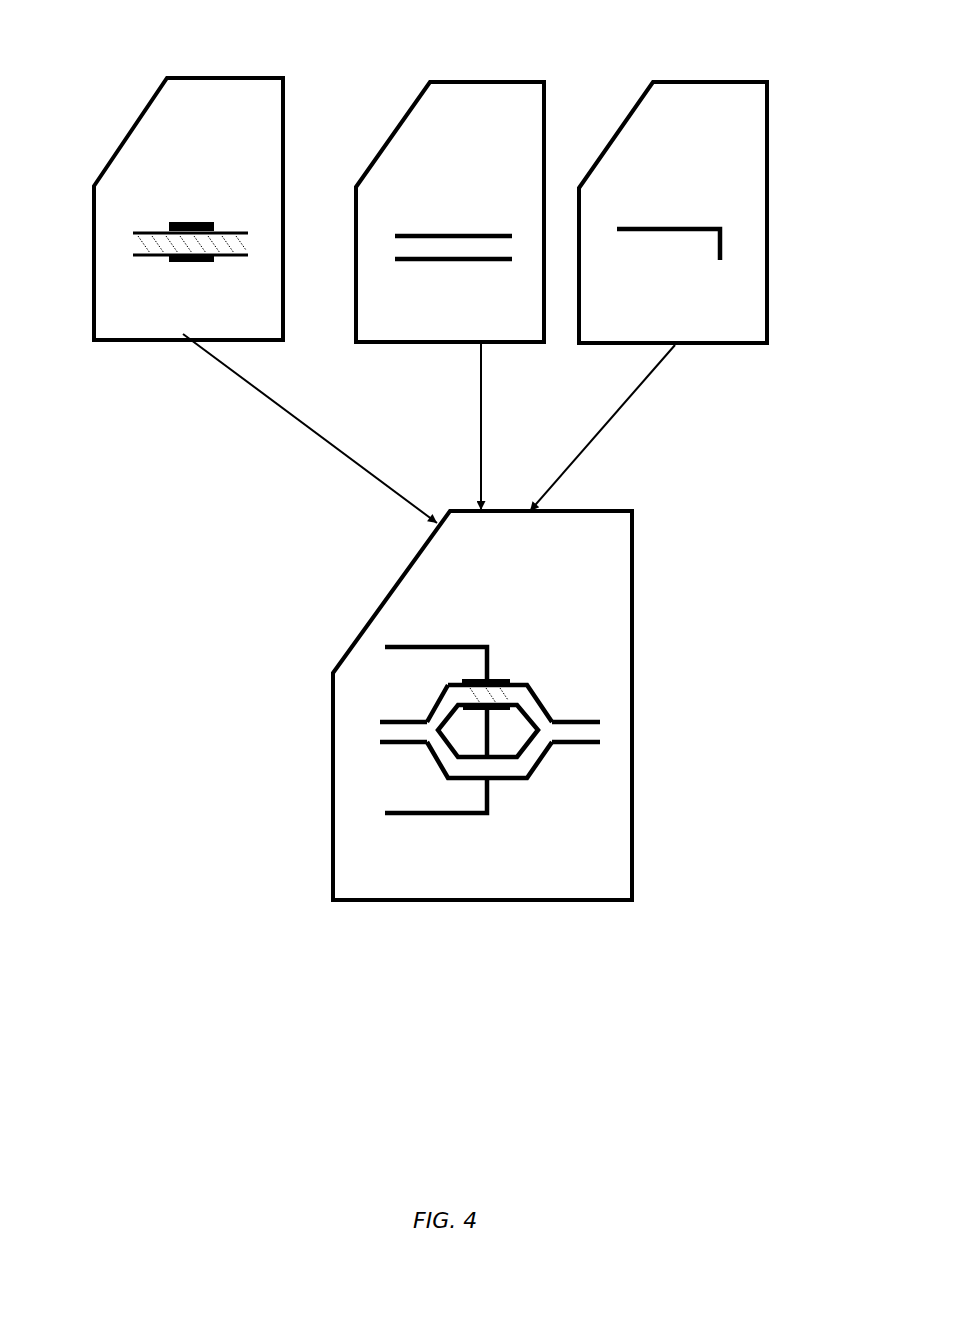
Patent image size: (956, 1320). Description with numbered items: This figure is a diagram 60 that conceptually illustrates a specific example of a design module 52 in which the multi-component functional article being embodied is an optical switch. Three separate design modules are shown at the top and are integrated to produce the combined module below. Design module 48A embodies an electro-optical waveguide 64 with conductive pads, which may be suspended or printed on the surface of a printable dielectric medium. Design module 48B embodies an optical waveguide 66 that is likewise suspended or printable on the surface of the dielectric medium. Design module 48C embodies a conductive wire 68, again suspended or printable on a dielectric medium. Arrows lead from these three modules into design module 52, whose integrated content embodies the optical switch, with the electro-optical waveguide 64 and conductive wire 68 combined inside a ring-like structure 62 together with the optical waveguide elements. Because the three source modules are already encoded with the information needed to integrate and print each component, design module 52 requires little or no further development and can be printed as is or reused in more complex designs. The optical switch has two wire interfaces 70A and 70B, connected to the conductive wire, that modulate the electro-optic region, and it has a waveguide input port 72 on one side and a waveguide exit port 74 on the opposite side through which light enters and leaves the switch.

The design module 48A is at (240, 77).
The design module 48B is at (488, 80).
The design module 48C is at (703, 80).
The design module 52 is at (444, 906).
The diagram 60 is at (265, 1062).
The ring structure 62 is at (547, 707).
The electro-optical waveguide 64 is at (200, 222).
The optical waveguide 66 is at (479, 236).
The conductive wire 68 is at (698, 229).
The wire interface 70A is at (385, 646).
The wire interface 70B is at (378, 815).
The waveguide input port 72 is at (385, 738).
The waveguide exit port 74 is at (597, 733).